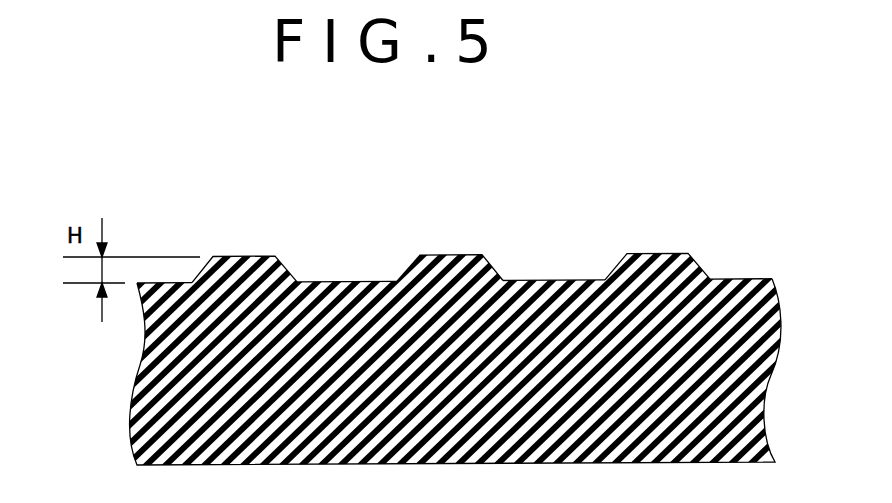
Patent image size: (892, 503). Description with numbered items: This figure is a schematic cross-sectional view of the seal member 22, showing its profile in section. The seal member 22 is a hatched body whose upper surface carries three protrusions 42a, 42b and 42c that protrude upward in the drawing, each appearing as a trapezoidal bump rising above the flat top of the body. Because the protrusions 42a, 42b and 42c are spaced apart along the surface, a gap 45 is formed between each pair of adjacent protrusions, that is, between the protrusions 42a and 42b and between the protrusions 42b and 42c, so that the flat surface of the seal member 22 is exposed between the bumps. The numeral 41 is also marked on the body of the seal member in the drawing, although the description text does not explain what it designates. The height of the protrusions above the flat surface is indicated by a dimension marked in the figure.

The seal member 22 is at (733, 330).
The base portion 41 is at (365, 325).
The protrusion 42a is at (243, 275).
The protrusion 42b is at (452, 273).
The protrusion 42c is at (657, 272).
The gap 45 is at (331, 272).